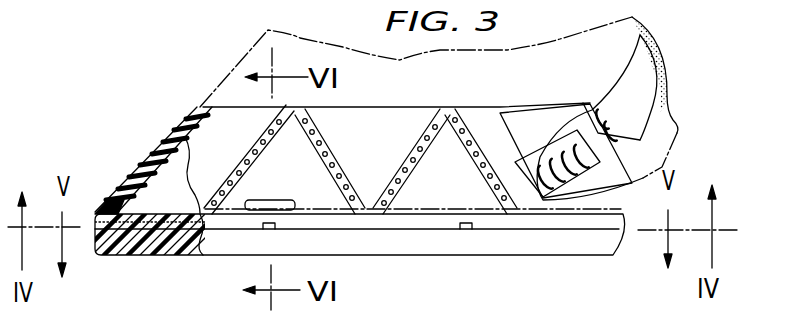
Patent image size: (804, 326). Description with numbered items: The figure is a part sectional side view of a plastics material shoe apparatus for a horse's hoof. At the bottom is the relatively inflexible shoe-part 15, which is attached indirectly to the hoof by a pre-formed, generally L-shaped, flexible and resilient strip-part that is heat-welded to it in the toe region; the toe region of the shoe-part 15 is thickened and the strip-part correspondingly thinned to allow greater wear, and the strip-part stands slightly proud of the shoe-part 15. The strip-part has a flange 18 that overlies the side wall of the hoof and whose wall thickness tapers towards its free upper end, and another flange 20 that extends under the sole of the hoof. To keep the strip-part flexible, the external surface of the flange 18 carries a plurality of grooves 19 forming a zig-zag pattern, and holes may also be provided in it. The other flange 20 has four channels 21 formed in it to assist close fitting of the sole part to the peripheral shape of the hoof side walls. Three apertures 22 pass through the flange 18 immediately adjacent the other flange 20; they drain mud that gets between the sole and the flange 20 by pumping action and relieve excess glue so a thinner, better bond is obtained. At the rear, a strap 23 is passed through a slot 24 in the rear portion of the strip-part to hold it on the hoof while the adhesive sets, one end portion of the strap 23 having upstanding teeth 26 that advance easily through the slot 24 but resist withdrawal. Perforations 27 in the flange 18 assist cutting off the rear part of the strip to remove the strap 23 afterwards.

The shoe-part 15 is at (532, 245).
The flange 18 is at (158, 155).
The grooves 19 is at (238, 172).
The other flange 20 is at (170, 215).
The channels 21 is at (267, 230).
The apertures 22 is at (268, 200).
The strap 23 is at (637, 92).
The slot 24 is at (592, 118).
The upstanding teeth 26 is at (513, 128).
The perforations 27 is at (562, 117).